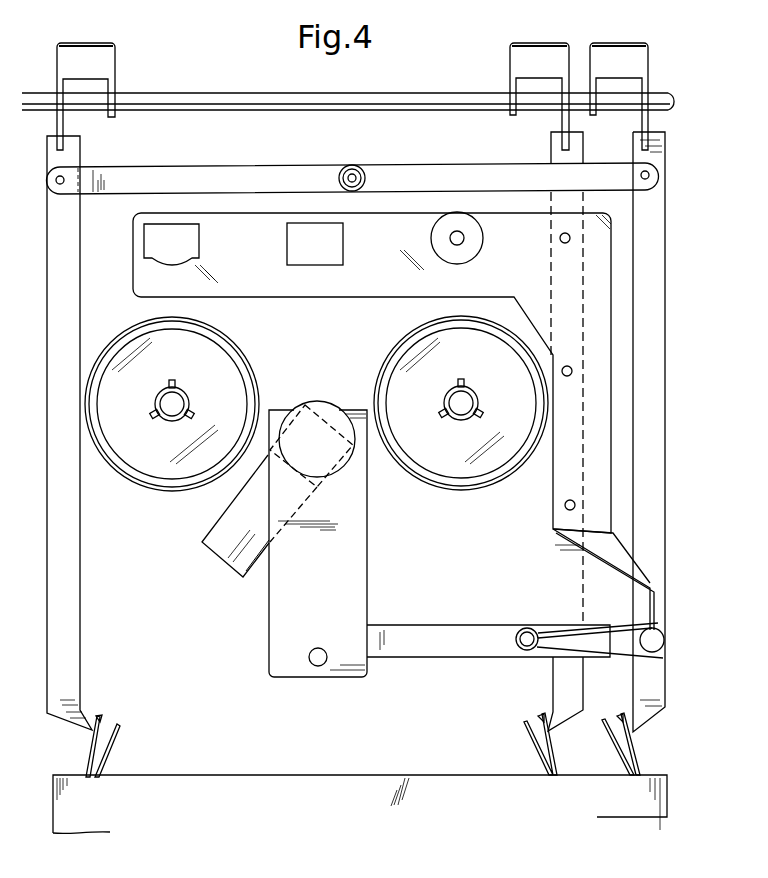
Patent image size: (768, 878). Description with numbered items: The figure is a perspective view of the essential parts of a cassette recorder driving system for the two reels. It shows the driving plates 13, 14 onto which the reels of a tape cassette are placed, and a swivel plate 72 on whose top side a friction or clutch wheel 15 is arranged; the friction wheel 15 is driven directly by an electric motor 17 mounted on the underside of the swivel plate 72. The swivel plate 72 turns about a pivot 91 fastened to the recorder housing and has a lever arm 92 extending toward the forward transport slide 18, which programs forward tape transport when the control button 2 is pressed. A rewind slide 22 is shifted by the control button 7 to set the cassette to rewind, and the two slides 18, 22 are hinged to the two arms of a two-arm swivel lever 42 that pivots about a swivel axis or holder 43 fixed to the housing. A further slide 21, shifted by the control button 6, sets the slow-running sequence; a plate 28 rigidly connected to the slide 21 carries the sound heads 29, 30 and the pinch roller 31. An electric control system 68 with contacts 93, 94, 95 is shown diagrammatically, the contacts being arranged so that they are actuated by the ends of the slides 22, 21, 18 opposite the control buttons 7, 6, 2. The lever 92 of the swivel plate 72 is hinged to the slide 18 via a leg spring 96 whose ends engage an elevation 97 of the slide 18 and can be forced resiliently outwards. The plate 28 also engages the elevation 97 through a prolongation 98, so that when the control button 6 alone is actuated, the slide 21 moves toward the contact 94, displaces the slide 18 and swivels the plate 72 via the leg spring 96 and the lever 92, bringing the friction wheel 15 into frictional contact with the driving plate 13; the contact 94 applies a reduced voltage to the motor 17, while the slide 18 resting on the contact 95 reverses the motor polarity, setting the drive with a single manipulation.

The control button 2 is at (643, 60).
The control button 6 is at (520, 58).
The control button 7 is at (108, 62).
The driving plate 13 is at (476, 482).
The driving plate 14 is at (138, 478).
The friction wheel 15 is at (337, 410).
The electric motor 17 is at (228, 556).
The forward transport slide 18 is at (655, 437).
The slide 21 is at (556, 278).
The rewind slide 22 is at (82, 648).
The plate 28 is at (297, 292).
The sound head 29 is at (195, 238).
The sound head 30 is at (333, 258).
The pinch roller 31 is at (461, 222).
The two-arm swivel lever 42 is at (214, 170).
The swivel axis 43 is at (355, 167).
The electric control system 68 is at (318, 815).
The swivel plate 72 is at (362, 562).
The pivot 91 is at (318, 667).
The lever arm 92 is at (444, 656).
The contact 93 is at (115, 746).
The contact 94 is at (527, 723).
The contact 95 is at (633, 740).
The leg spring 96 is at (565, 632).
The elevation 97 is at (661, 645).
The prolongation 98 is at (652, 605).